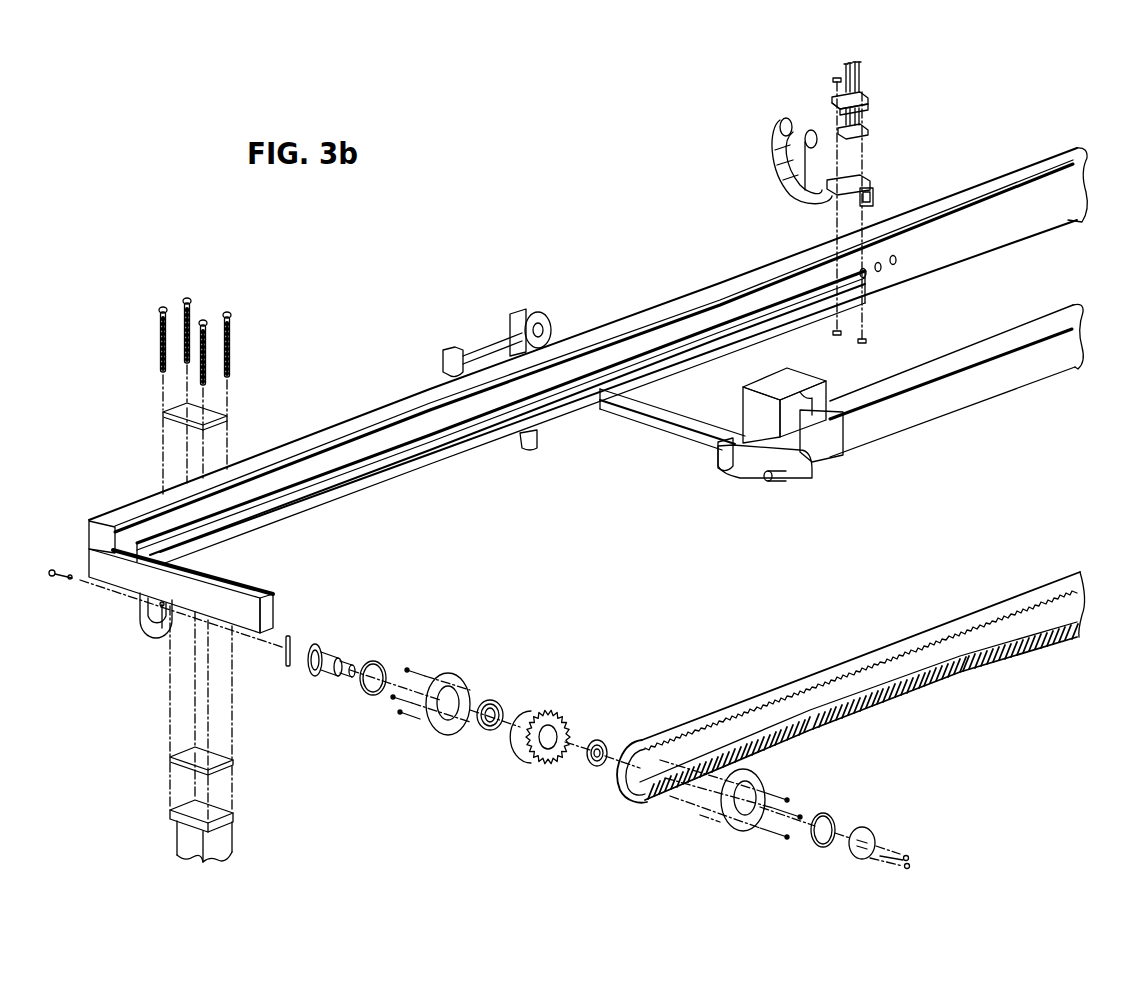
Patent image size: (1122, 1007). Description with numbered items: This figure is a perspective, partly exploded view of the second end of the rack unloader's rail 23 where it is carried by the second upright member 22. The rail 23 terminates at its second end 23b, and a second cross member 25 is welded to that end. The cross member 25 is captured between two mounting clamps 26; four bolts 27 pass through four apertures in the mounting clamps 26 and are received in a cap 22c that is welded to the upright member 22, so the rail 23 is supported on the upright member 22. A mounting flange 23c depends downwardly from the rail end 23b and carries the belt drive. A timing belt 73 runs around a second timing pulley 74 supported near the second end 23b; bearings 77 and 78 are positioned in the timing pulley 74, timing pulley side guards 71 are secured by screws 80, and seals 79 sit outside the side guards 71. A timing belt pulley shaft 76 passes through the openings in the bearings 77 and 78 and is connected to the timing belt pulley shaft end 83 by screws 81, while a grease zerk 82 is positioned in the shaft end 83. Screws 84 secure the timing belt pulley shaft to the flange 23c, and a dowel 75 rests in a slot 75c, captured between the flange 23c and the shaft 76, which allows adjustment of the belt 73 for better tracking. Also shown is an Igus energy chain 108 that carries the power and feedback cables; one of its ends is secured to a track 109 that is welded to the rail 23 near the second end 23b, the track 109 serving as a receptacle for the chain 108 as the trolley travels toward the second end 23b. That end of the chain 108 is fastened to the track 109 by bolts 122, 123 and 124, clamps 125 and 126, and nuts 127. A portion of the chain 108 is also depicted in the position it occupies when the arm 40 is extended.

The second upright member 22 is at (177, 838).
The cap 22c is at (240, 821).
The rail 23 is at (1062, 150).
The second end of rail 23b is at (125, 512).
The mounting flange 23c is at (150, 636).
The second cross member 25 is at (260, 598).
The mounting clamps 26 is at (231, 423).
The bolts 27 is at (229, 346).
The arm 40 is at (985, 396).
The timing pulley side guards 71 is at (459, 687).
The timing belt 73 is at (812, 680).
The second timing pulley 74 is at (536, 766).
The dowel 75 is at (288, 670).
The slot 75c is at (161, 612).
The timing belt pulley shaft 76 is at (323, 674).
The bearing 77 is at (486, 734).
The bearing 78 is at (592, 768).
The seals 79 is at (374, 661).
The screws 80 is at (400, 672).
The screws 81 is at (898, 857).
The grease zerk 82 is at (888, 862).
The timing belt pulley shaft end 83 is at (861, 826).
The screws 84 is at (63, 562).
The Igus energy chain 108 is at (796, 183).
The track 109 is at (392, 487).
The bolt 122 is at (869, 179).
The bolt 123 is at (873, 203).
The bolt 124 is at (846, 68).
The clamp 125 is at (870, 104).
The clamp 126 is at (870, 131).
The nuts 127 is at (864, 90).